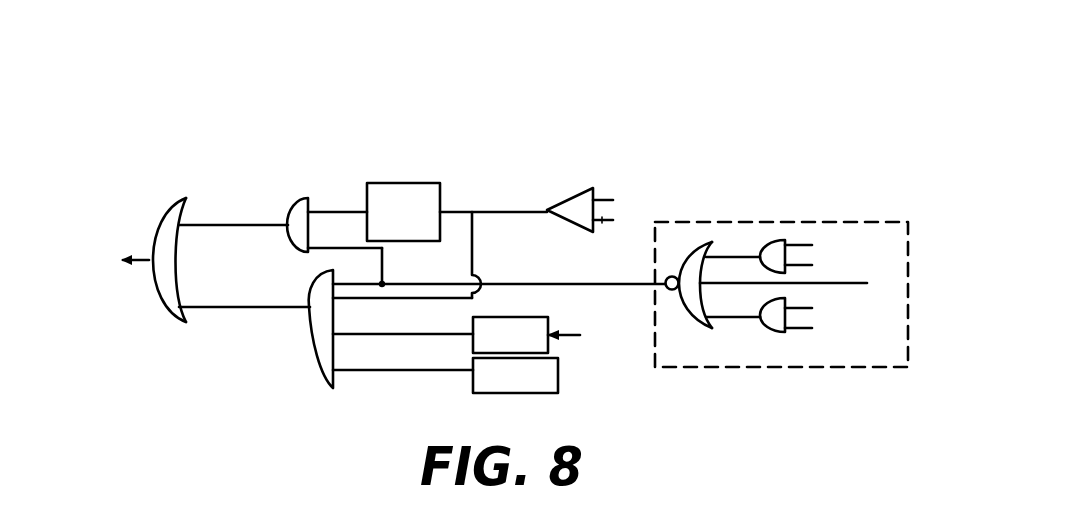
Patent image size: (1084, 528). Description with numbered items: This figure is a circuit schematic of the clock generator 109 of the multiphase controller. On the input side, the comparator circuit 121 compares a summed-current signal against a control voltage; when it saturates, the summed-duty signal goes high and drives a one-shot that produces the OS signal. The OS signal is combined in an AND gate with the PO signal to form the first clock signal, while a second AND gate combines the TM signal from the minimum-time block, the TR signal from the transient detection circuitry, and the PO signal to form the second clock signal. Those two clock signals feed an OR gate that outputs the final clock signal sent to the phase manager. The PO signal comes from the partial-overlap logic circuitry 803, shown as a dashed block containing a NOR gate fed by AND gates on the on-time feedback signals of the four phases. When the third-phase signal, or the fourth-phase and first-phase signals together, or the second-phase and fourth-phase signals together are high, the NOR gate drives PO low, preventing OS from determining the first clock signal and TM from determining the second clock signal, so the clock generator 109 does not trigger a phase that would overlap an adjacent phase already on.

The clock generator 109 is at (731, 126).
The comparator circuit 121 is at (567, 202).
The partial-overlap logic circuitry 803 is at (752, 368).